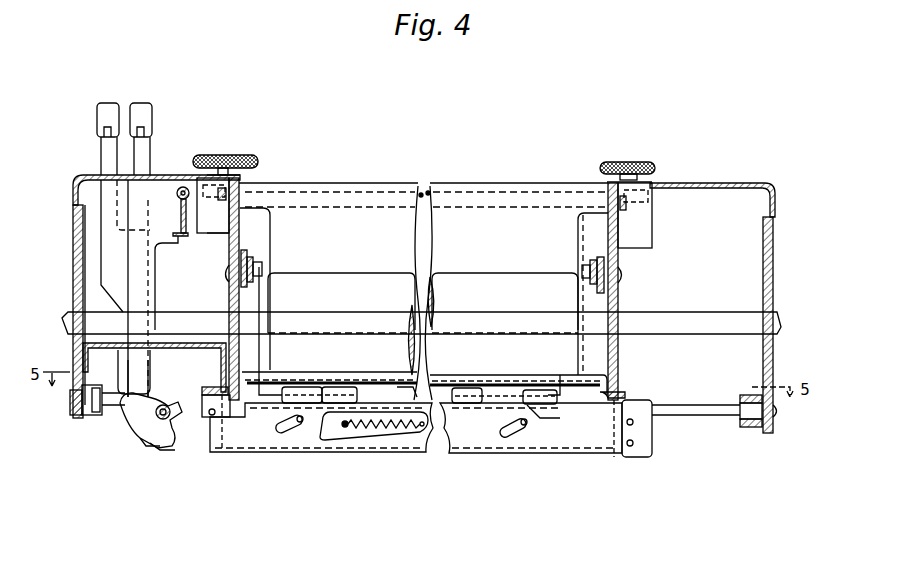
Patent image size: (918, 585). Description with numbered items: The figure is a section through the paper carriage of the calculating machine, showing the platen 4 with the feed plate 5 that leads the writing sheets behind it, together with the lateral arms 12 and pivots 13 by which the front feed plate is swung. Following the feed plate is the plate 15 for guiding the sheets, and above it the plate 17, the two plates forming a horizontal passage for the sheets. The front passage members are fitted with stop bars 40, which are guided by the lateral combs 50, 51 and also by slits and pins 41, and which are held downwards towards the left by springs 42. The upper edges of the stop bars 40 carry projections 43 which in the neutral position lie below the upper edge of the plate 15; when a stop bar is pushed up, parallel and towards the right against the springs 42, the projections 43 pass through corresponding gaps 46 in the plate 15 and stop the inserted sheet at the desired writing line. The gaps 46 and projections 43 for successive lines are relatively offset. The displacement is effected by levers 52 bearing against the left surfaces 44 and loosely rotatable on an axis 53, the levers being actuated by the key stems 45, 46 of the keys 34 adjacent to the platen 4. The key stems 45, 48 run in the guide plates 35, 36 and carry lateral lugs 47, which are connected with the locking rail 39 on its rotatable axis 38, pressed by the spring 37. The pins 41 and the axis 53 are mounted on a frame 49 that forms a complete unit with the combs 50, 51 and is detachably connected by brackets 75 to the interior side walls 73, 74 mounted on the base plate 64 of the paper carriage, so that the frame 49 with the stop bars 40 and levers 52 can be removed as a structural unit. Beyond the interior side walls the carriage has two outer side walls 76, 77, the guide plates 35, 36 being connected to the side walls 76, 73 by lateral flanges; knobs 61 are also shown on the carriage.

The platen 4 is at (388, 283).
The feed plate 5 is at (462, 228).
The lateral arms 12 is at (249, 252).
The pivots 13 is at (262, 270).
The plate 15 is at (375, 384).
The plate 17 is at (292, 372).
The keys 34 is at (143, 105).
The guide plate 35 is at (198, 345).
The guide plate 36 is at (90, 174).
The spring 37 is at (184, 180).
The axis 38 is at (180, 188).
The locking rail 39 is at (190, 234).
The stop bars 40 is at (465, 450).
The pins 41 is at (300, 428).
The springs 42 is at (386, 430).
The projections 43 is at (300, 385).
The left surfaces 44 is at (172, 450).
The key stem 45 is at (120, 375).
The gaps 46 is at (290, 383).
The lateral lugs 47 is at (165, 236).
The key stem 48 is at (151, 376).
The frame 49 is at (153, 447).
The lateral comb 50 is at (225, 412).
The lateral comb 51 is at (613, 432).
The levers 52 is at (143, 425).
The axis 53 is at (170, 406).
The knob 61 is at (232, 156).
The base plate 64 is at (106, 405).
The side wall 73 is at (229, 302).
The side wall 74 is at (618, 298).
The brackets 75 is at (222, 386).
The outer side wall 76 is at (72, 244).
The outer side wall 77 is at (763, 265).